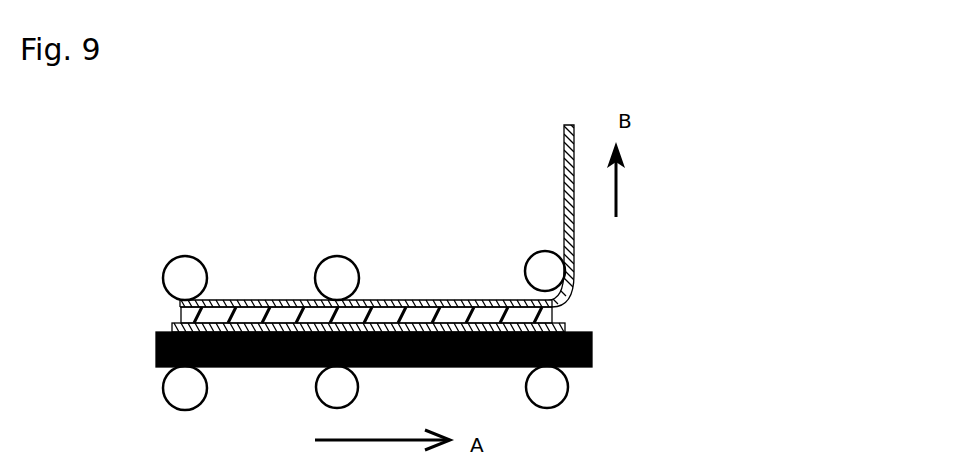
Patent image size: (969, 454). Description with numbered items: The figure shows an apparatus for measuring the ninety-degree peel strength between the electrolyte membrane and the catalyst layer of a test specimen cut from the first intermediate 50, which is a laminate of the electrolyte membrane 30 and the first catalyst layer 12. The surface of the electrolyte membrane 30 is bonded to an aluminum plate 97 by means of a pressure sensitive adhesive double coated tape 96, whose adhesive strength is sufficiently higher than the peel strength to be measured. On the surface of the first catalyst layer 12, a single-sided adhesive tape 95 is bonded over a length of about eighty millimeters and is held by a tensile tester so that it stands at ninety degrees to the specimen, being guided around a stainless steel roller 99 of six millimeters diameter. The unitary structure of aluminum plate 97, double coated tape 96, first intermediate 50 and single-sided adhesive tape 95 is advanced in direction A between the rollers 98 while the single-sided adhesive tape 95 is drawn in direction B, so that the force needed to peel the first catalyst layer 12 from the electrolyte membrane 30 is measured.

The first catalyst layer 12 is at (553, 300).
The electrolyte membrane 30 is at (553, 318).
The first intermediate 50 is at (658, 266).
The single-sided adhesive tape 95 is at (577, 252).
The pressure sensitive adhesive double coated tape 96 is at (566, 328).
The aluminum plate 97 is at (593, 362).
The rollers 98 is at (342, 385).
The stainless steel roller 99 is at (542, 272).